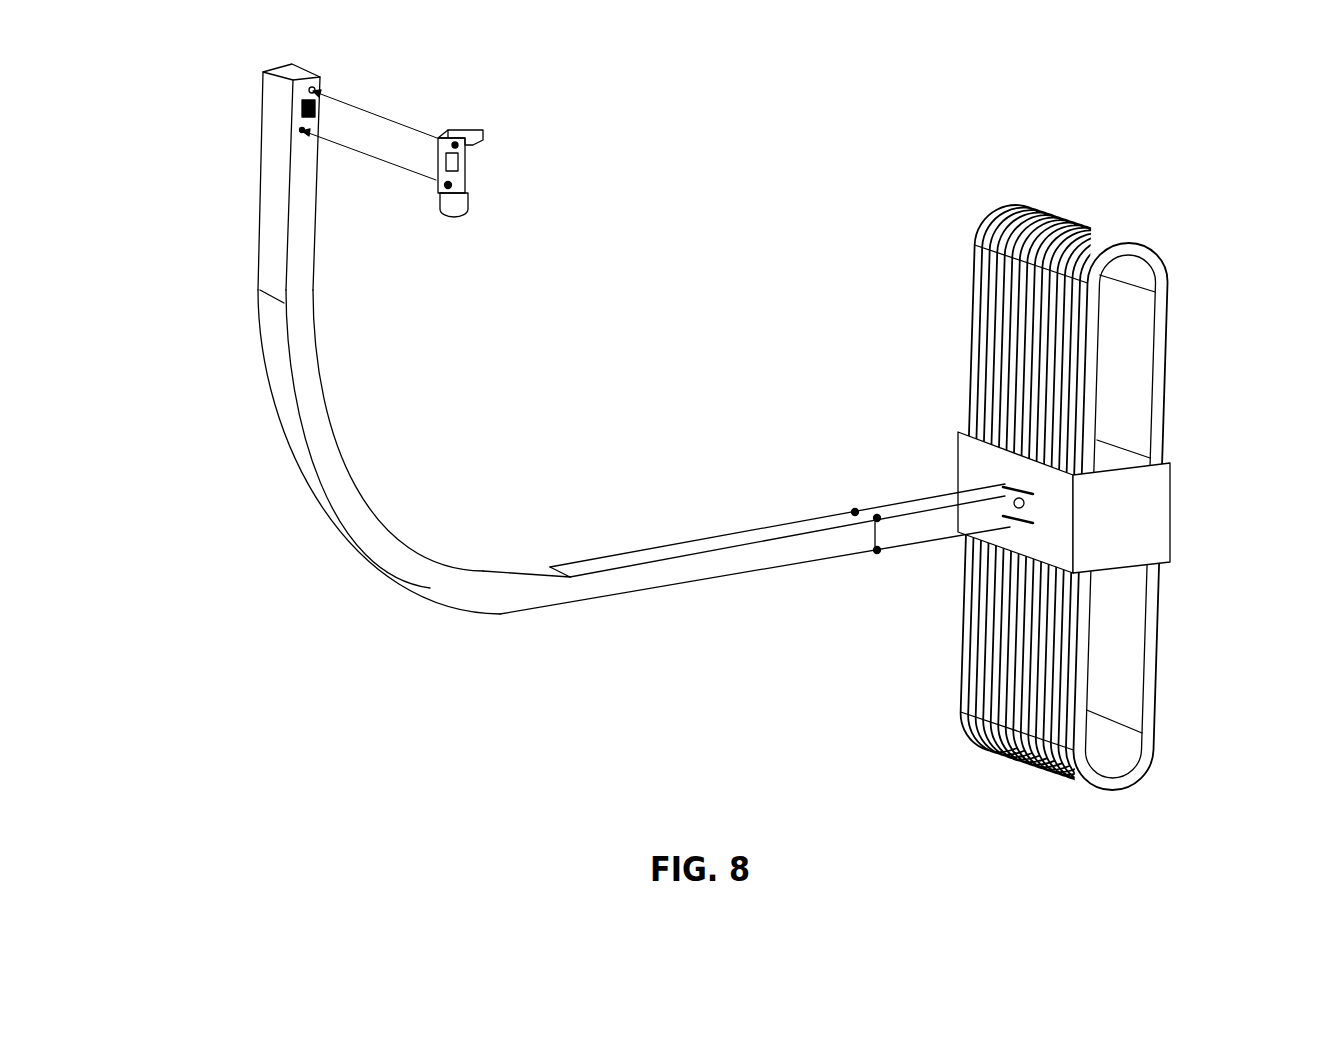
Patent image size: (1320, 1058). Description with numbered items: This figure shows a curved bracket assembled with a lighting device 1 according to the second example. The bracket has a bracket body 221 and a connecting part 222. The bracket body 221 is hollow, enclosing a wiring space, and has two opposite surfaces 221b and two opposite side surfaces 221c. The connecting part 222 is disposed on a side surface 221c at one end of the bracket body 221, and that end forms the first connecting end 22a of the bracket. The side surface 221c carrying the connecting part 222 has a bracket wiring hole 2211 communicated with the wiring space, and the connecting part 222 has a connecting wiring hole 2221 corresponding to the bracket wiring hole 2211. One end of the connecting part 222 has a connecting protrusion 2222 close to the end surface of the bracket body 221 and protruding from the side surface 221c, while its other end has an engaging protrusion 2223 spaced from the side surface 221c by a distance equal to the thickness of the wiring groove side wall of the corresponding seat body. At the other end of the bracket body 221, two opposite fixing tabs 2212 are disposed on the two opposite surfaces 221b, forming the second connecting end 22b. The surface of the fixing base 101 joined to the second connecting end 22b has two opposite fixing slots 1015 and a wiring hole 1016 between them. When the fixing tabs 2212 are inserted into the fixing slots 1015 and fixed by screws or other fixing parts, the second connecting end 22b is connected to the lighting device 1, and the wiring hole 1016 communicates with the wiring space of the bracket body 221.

The lighting device 1 is at (1136, 224).
The fixing base 101 is at (1172, 512).
The fixing slots 1015 is at (1003, 487).
The wiring hole 1016 is at (1024, 506).
The first connecting end 22a is at (243, 100).
The second connecting end 22b is at (849, 490).
The bracket body 221 is at (564, 386).
The surfaces 221b is at (292, 432).
The side surfaces 221c is at (305, 183).
The bracket wiring hole 2211 is at (300, 109).
The fixing tabs 2212 is at (853, 511).
The connecting part 222 is at (449, 213).
The connecting wiring hole 2221 is at (467, 157).
The connecting protrusion 2222 is at (472, 138).
The engaging protrusion 2223 is at (456, 216).